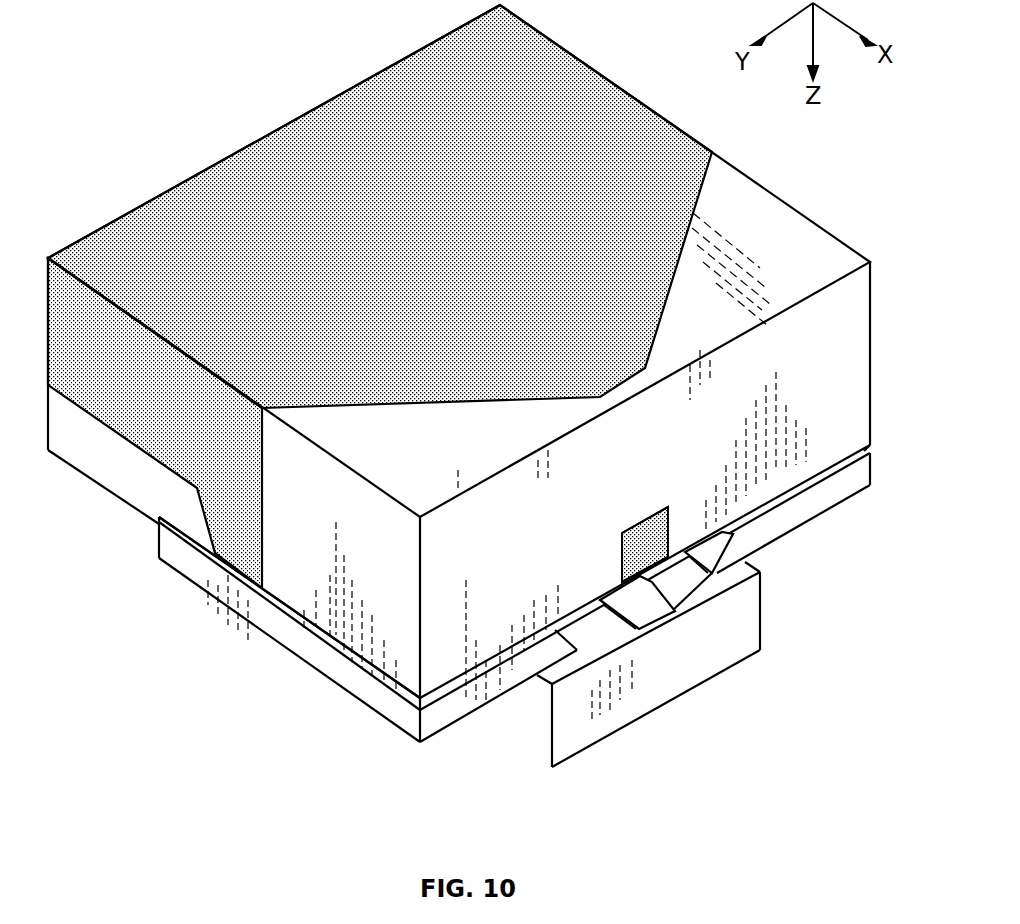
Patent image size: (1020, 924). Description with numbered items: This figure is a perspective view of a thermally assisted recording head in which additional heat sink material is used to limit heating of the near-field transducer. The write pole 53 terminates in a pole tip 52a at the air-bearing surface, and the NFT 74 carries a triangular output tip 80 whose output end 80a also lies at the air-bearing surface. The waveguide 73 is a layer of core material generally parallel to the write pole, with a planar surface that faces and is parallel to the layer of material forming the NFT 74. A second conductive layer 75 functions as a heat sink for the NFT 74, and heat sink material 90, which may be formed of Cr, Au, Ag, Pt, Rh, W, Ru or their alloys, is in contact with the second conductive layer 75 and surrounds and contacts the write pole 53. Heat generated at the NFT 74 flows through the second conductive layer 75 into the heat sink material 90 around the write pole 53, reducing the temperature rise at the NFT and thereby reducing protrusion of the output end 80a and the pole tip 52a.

The write pole 53 is at (196, 170).
The heat sink material 90 is at (767, 205).
The pole tip 52a is at (630, 553).
The triangular output tip 80 is at (632, 598).
The output end 80a is at (672, 602).
The second conductive layer 75 is at (372, 668).
The NFT 74 is at (404, 718).
The waveguide 73 is at (525, 736).